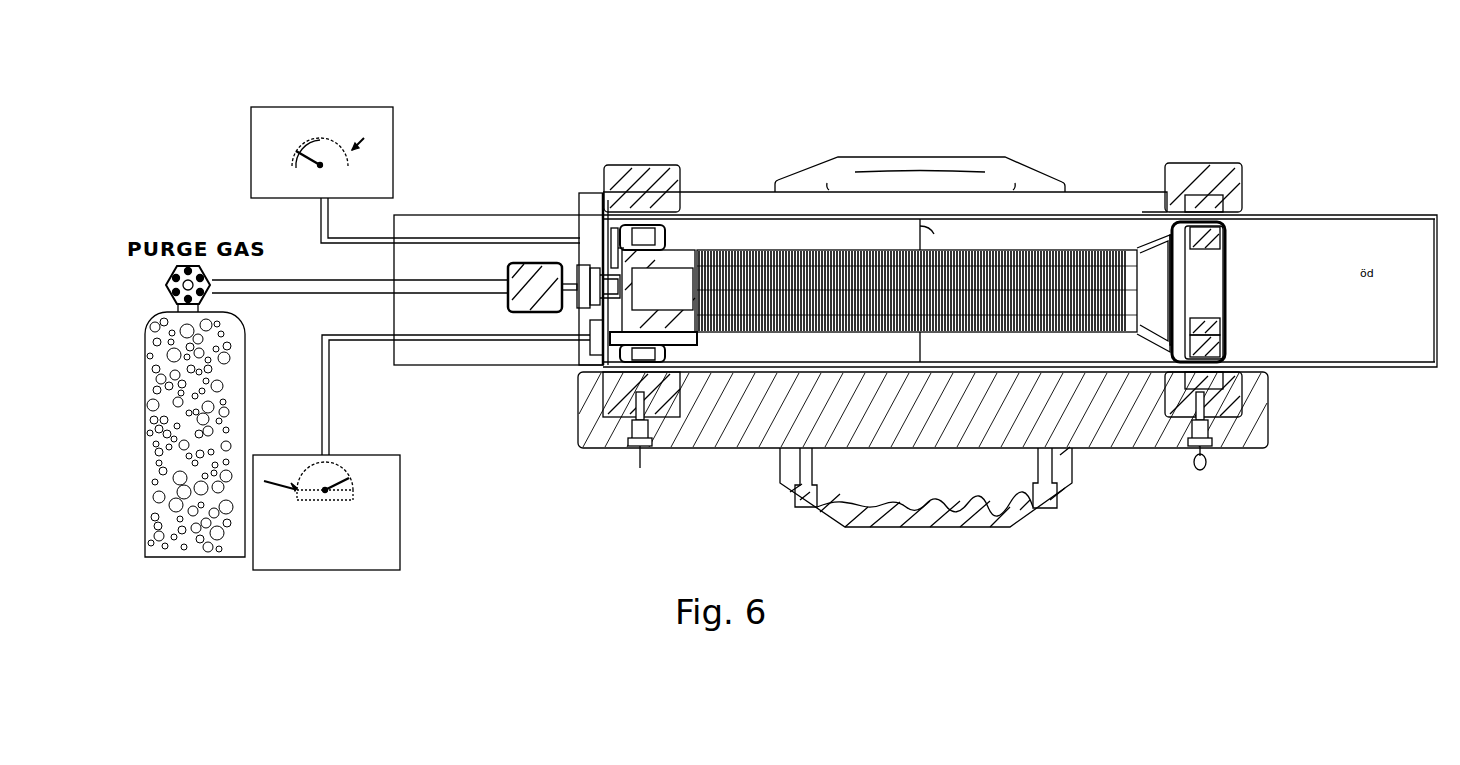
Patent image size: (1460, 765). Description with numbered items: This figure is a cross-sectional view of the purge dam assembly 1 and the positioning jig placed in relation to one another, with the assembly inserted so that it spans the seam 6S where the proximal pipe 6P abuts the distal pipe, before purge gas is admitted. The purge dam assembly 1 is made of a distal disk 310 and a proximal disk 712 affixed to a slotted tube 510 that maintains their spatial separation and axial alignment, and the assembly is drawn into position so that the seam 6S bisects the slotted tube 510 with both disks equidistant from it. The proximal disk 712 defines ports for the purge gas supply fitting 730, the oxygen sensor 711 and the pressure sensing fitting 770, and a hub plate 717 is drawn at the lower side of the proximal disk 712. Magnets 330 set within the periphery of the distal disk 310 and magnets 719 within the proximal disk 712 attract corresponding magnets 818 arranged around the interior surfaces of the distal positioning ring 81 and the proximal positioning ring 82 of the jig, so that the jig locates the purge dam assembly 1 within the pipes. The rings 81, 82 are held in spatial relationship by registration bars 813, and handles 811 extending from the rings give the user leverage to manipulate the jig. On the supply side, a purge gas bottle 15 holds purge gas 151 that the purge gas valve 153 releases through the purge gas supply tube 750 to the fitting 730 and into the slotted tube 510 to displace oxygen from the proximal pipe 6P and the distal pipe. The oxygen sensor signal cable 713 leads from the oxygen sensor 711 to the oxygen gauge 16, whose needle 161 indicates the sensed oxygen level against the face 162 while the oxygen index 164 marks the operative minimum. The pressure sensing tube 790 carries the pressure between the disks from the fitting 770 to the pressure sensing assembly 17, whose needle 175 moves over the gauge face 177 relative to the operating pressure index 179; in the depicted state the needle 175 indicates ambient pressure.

The purge dam assembly 1 is at (1243, 291).
The purge gas bottle 15 is at (179, 460).
The oxygen sensor 16 is at (403, 524).
The pressure sensing assembly 17 is at (250, 121).
The distal positioning ring 81 is at (665, 165).
The proximal positioning ring 82 is at (1215, 158).
The purge gas 151 is at (145, 510).
The purge gas valve 153 is at (174, 283).
The needle 161 is at (326, 492).
The face 162 is at (342, 463).
The oxygen index 164 is at (276, 483).
The needle 175 is at (319, 166).
The gauge face 177 is at (298, 140).
The operating pressure index 179 is at (380, 134).
The distal disk 310 is at (1222, 342).
The magnets 330 is at (1222, 233).
The slotted tube 510 is at (845, 328).
The oxygen sensor 711 is at (590, 347).
The proximal disk 712 is at (600, 214).
The oxygen sensor signal cable 713 is at (497, 335).
The lower hub plate 717 is at (694, 345).
The magnets 719 is at (659, 231).
The purge gas supply fitting 730 is at (564, 287).
The purge gas supply tube 750 is at (314, 278).
The pressure sensing fitting 770 is at (605, 253).
The pressure sensing tube 790 is at (376, 238).
The handles 811 is at (1070, 469).
The registration bar 813 is at (1134, 446).
The magnets 818 is at (1204, 192).
The proximal pipe 6P is at (808, 240).
The seam 6S is at (935, 290).